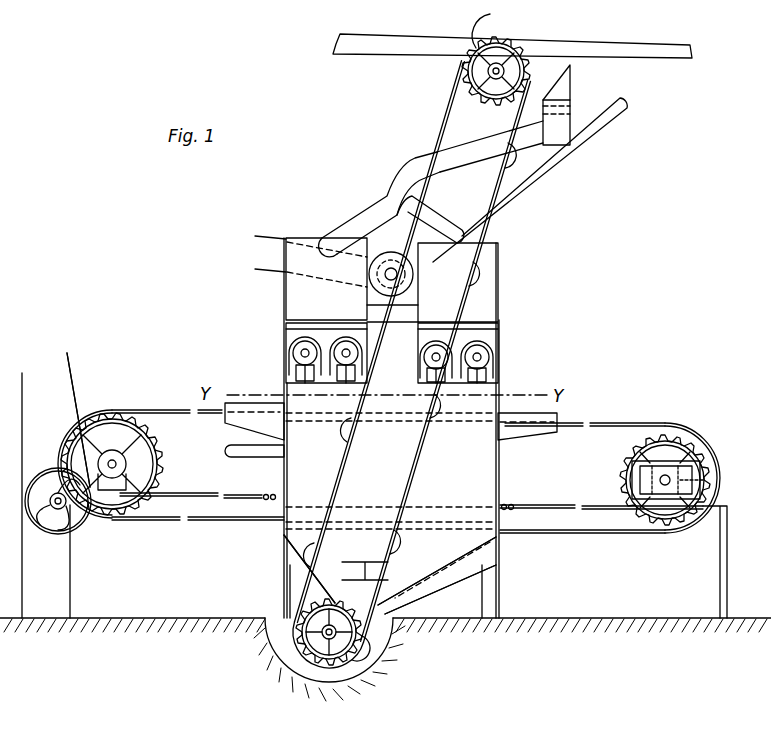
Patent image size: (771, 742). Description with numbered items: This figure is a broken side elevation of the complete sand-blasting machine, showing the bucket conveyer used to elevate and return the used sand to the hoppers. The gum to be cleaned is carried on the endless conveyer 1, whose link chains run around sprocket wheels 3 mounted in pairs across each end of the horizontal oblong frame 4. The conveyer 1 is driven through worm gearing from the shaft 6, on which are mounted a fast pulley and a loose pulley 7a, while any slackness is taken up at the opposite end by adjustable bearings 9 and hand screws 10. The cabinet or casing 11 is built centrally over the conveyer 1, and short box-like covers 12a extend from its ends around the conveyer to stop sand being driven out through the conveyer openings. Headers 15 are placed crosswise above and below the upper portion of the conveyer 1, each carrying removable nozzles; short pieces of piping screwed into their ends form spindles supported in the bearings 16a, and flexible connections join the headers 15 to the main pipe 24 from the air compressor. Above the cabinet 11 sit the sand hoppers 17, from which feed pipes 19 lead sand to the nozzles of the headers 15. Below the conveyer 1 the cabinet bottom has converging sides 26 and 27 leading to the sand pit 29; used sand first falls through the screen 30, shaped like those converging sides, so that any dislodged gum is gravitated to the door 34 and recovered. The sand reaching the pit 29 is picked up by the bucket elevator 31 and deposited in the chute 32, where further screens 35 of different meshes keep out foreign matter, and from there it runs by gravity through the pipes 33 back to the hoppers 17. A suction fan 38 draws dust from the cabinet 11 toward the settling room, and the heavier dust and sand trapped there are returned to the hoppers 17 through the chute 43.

The endless conveyer 1 is at (183, 410).
The sprocket wheels 3 is at (150, 438).
The horizontal oblong frame 4 is at (195, 492).
The shaft 6 is at (58, 508).
The loose pulley 7a is at (52, 465).
The adjustable bearings 9 is at (668, 487).
The hand screws 10 is at (714, 452).
The cabinet or casing 11 is at (391, 428).
The box-like covers 12a is at (258, 420).
The headers 15 is at (295, 356).
The bearings 16a is at (523, 385).
The sand hoppers 17 is at (376, 279).
The feed pipes 19 is at (335, 380).
The main pipe 24 is at (241, 452).
The converging side 26 is at (300, 570).
The converging side 27 is at (480, 577).
The sand pit 29 is at (363, 648).
The screen 30 is at (440, 589).
The bucket elevator 31 is at (452, 104).
The chute 32 is at (558, 132).
The pipes 33 is at (432, 152).
The door 34 is at (366, 562).
The screens 35 is at (560, 113).
The suction fan 38 is at (379, 274).
The chute 43 is at (600, 117).